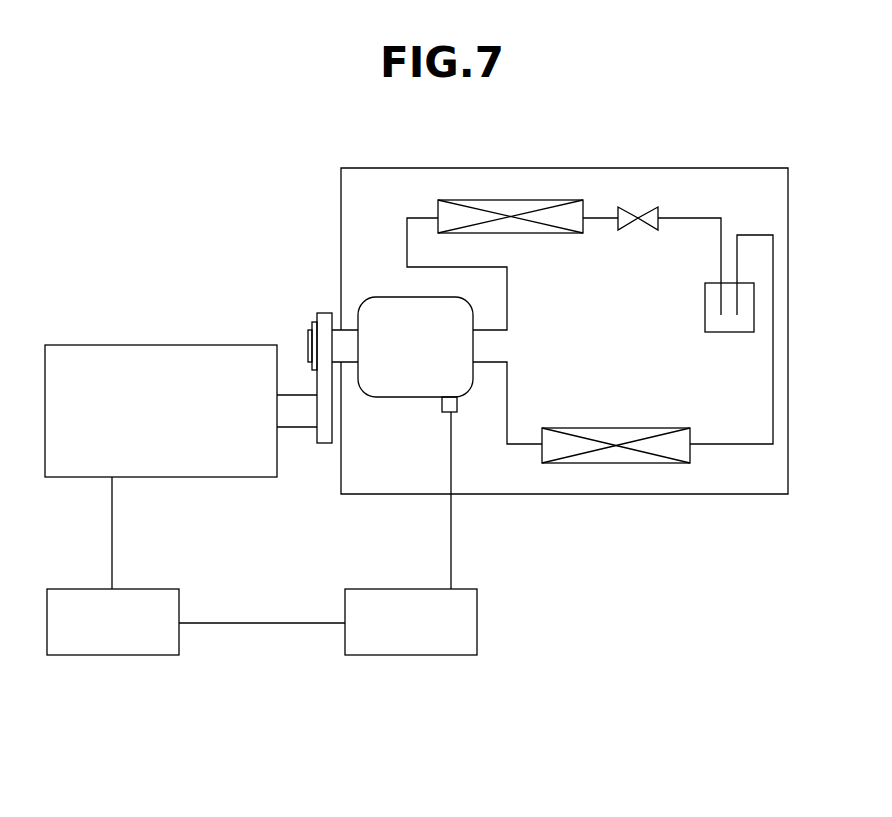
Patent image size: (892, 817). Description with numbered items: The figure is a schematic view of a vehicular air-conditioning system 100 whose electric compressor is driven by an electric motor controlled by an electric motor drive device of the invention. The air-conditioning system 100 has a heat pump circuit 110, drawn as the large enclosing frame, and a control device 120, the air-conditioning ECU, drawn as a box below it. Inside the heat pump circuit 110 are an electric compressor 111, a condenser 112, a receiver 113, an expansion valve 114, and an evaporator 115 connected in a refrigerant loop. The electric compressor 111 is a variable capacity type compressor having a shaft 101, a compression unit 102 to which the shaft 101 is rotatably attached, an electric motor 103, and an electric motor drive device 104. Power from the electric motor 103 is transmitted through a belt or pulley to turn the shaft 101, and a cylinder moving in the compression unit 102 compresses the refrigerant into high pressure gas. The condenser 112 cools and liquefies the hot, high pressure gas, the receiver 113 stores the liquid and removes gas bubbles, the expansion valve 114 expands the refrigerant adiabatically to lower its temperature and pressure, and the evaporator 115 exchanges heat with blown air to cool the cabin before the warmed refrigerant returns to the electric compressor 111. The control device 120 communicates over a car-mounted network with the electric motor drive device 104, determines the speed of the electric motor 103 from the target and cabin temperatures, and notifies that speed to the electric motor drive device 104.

The vehicular air-conditioning system 100 is at (740, 633).
The shaft 101 is at (347, 337).
The compression unit 102 is at (412, 346).
The electric motor 103 is at (175, 345).
The electric motor drive device 104 is at (145, 655).
The heat pump circuit 110 is at (742, 494).
The electric compressor 111 is at (402, 297).
The condenser 112 is at (623, 463).
The receiver 113 is at (754, 310).
The expansion valve 114 is at (645, 208).
The evaporator 115 is at (510, 200).
The control device 120 is at (448, 655).